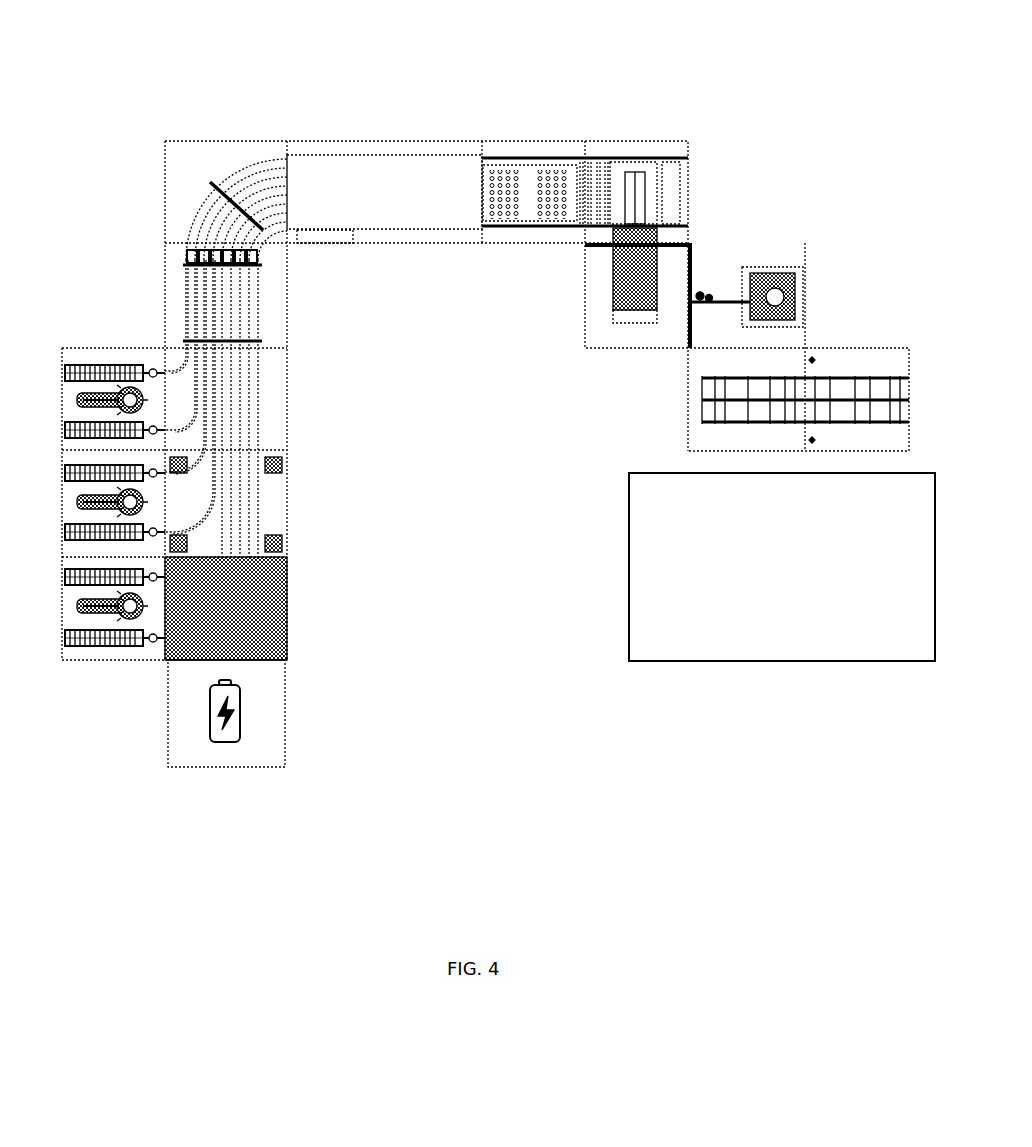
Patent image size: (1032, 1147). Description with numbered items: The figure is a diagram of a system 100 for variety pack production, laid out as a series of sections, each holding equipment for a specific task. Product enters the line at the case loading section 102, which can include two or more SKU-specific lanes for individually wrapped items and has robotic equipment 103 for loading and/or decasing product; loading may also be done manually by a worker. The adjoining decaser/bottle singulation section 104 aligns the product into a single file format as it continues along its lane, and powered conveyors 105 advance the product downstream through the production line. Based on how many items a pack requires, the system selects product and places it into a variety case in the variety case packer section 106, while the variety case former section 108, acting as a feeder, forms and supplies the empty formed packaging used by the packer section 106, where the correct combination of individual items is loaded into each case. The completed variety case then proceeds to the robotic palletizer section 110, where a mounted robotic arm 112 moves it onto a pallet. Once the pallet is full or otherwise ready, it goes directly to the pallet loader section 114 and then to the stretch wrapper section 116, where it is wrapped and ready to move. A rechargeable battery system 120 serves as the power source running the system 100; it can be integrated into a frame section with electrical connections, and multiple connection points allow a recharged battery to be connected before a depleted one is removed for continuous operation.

The system 100 is at (705, 95).
The case loading section 102 is at (97, 347).
The robotic equipment 103 is at (77, 605).
The decaser/bottle singulation section 104 is at (152, 347).
The powered conveyors 105 is at (177, 277).
The variety case packer section 106 is at (440, 134).
The variety case former section 108 is at (343, 250).
The robotic palletizer section 110 is at (597, 363).
The robotic arm 112 is at (815, 287).
The pallet loader section 114 is at (745, 473).
The stretch wrapper section 116 is at (858, 473).
The rechargeable battery system 120 is at (300, 715).